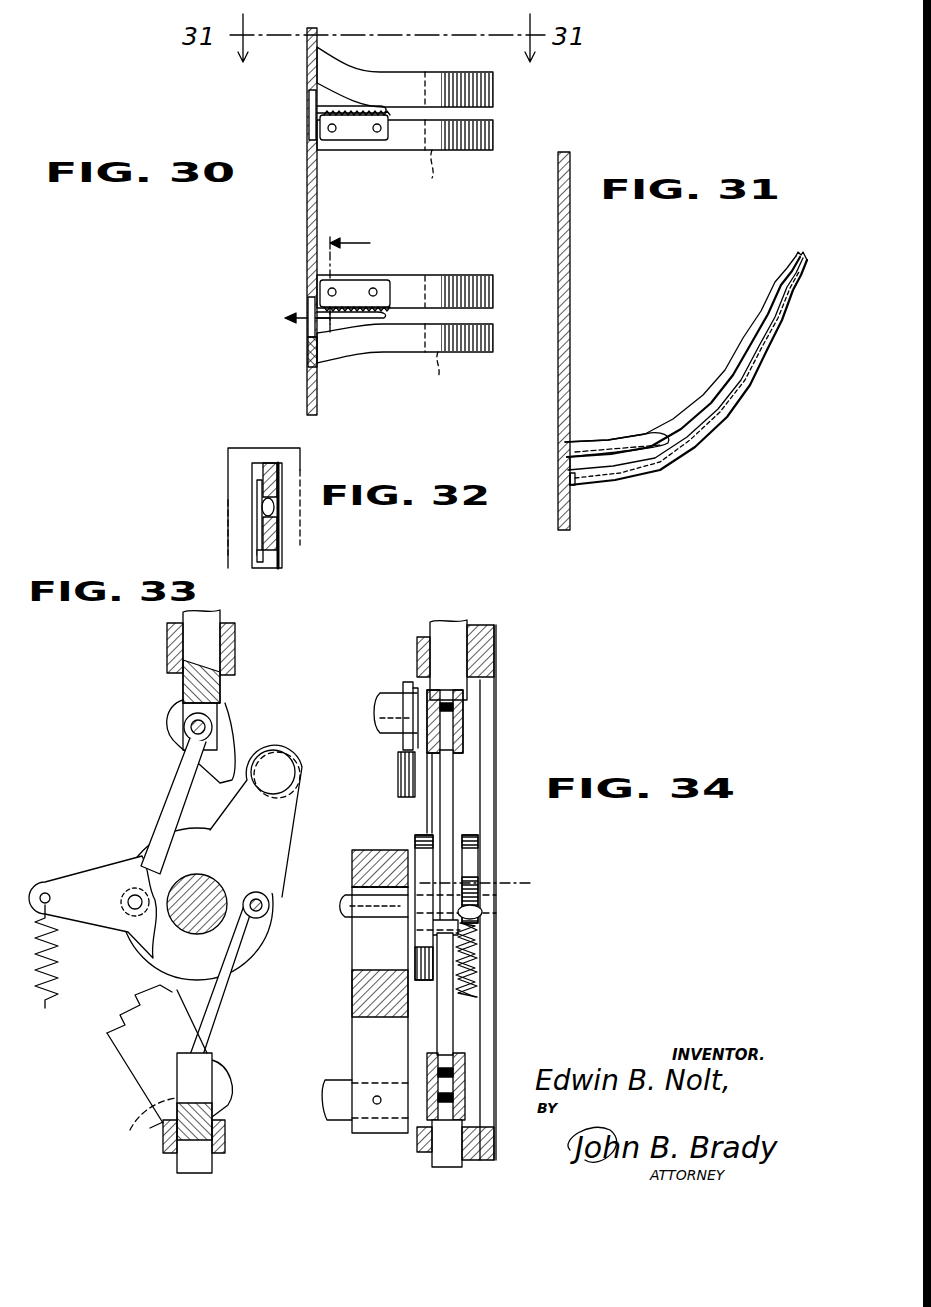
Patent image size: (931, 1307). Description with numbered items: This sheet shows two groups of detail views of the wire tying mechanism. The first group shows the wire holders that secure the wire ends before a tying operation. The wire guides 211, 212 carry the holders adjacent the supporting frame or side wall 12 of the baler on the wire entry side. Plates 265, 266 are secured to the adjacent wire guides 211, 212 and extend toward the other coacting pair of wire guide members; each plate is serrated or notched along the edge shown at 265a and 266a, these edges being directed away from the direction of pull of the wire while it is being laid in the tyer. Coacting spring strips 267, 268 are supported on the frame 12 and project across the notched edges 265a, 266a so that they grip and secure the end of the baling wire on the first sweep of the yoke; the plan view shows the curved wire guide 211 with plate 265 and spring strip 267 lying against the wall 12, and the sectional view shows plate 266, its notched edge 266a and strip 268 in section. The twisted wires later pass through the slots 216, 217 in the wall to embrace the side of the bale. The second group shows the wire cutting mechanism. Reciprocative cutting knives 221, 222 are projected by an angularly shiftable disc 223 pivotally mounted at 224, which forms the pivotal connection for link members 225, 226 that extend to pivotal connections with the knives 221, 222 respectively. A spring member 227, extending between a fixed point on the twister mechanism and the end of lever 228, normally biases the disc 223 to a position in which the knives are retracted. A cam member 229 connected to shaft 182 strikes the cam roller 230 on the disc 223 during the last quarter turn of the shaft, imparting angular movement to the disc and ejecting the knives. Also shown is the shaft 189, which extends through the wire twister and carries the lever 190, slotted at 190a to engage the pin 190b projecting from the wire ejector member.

In FIG. 30, the side wall 12 is at (306, 214).
In FIG. 31, the side wall 12 is at (570, 305).
In FIG. 34, the shaft 182 is at (388, 700).
In FIG. 33, the shaft 189 is at (150, 1128).
In FIG. 34, the shaft 189 is at (340, 1115).
In FIG. 33, the lever 190 is at (130, 1062).
In FIG. 34, the lever 190 is at (360, 1047).
In FIG. 34, the slot 190a is at (380, 947).
In FIG. 34, the pin 190b is at (368, 917).
In FIG. 30, the wire guide 211 is at (455, 140).
In FIG. 31, the wire guide 211 is at (710, 403).
In FIG. 30, the wire guide 212 is at (448, 350).
In FIG. 32, the wire guide 212 is at (252, 470).
In FIG. 30, the slot 216 is at (309, 128).
In FIG. 30, the slot 217 is at (309, 300).
In FIG. 33, the cutting knife 221 is at (195, 643).
In FIG. 34, the cutting knife 221 is at (452, 652).
In FIG. 33, the cutting knife 222 is at (180, 1153).
In FIG. 34, the cutting knife 222 is at (435, 1150).
In FIG. 33, the disc 223 is at (177, 955).
In FIG. 34, the disc 223 is at (468, 855).
In FIG. 33, the pivot 224 is at (215, 880).
In FIG. 34, the pivot 224 is at (501, 900).
In FIG. 33, the link member 225 is at (175, 785).
In FIG. 34, the link member 225 is at (448, 775).
In FIG. 33, the link member 226 is at (215, 1010).
In FIG. 34, the link member 226 is at (455, 1022).
In FIG. 33, the spring member 227 is at (44, 1012).
In FIG. 34, the spring member 227 is at (475, 985).
In FIG. 33, the lever 228 is at (75, 893).
In FIG. 34, the lever 228 is at (483, 912).
In FIG. 33, the cam member 229 is at (228, 760).
In FIG. 34, the cam member 229 is at (405, 738).
In FIG. 33, the cam roller 230 is at (296, 750).
In FIG. 34, the cam roller 230 is at (400, 782).
In FIG. 30, the plate 265 is at (358, 142).
In FIG. 30, the notched edge 265a is at (345, 113).
In FIG. 31, the notched edge 265a is at (607, 443).
In FIG. 30, the plate 266 is at (360, 290).
In FIG. 32, the plate 266 is at (263, 484).
In FIG. 30, the notched edge 266a is at (372, 318).
In FIG. 32, the notched edge 266a is at (257, 552).
In FIG. 30, the spring strip 267 is at (316, 108).
In FIG. 31, the spring strip 267 is at (632, 457).
In FIG. 30, the spring strip 268 is at (308, 356).
In FIG. 32, the spring strip 268 is at (264, 568).